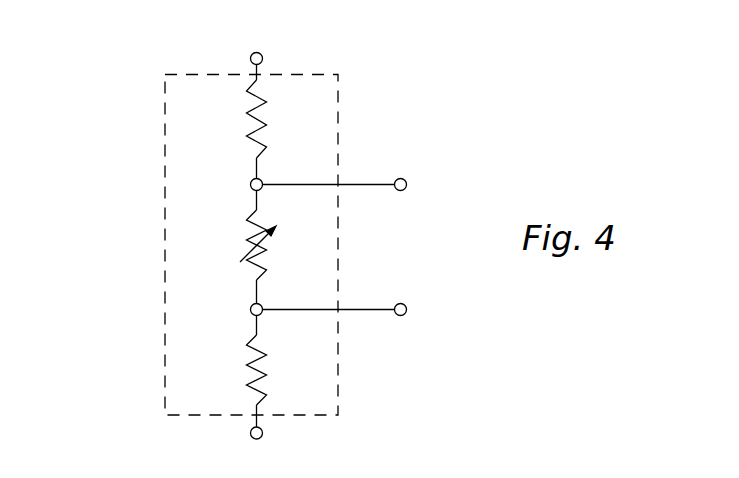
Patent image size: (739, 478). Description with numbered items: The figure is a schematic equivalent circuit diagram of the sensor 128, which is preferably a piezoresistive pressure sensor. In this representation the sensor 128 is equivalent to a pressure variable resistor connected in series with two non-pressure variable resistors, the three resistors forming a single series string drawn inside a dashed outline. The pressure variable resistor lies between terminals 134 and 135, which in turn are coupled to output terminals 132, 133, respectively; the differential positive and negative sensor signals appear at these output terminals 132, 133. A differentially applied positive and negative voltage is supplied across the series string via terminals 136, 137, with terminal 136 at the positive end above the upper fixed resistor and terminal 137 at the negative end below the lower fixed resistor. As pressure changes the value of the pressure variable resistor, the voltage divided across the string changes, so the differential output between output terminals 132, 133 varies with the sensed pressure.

The sensor 128 is at (165, 142).
The output terminal 132 is at (404, 179).
The output terminal 133 is at (403, 315).
The terminal 134 is at (251, 181).
The terminal 135 is at (251, 312).
The terminal 136 is at (251, 54).
The terminal 137 is at (250, 437).